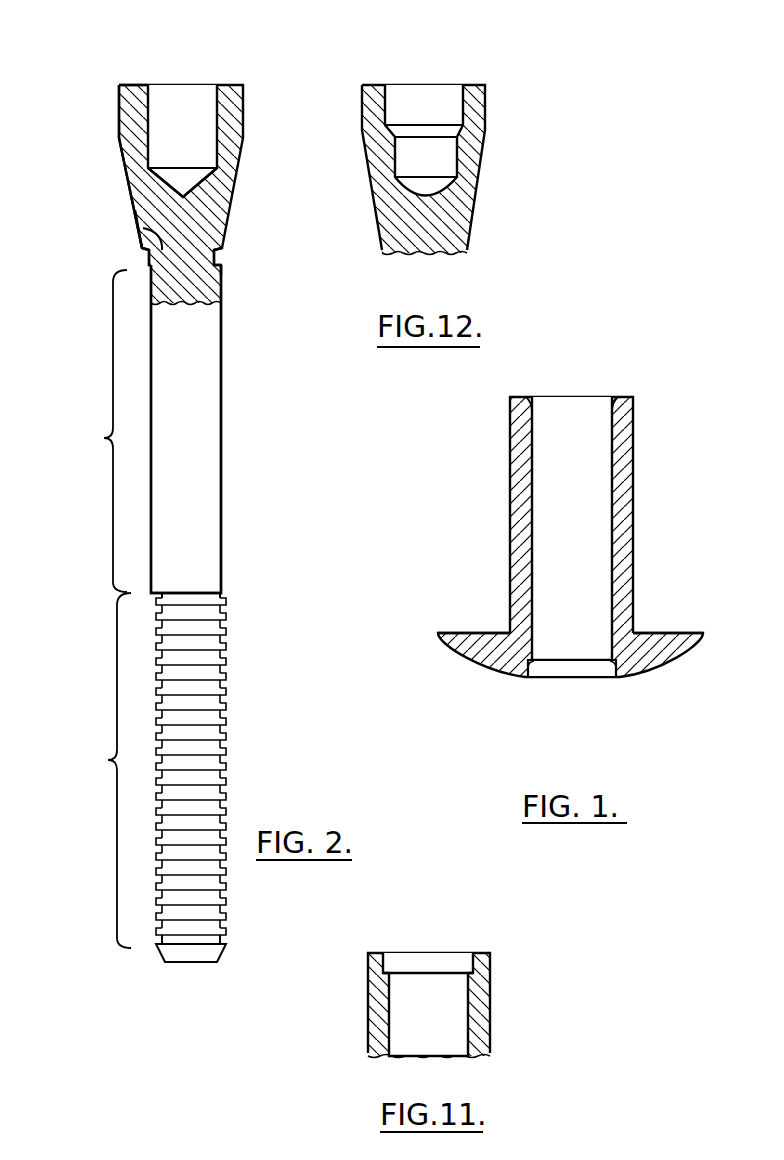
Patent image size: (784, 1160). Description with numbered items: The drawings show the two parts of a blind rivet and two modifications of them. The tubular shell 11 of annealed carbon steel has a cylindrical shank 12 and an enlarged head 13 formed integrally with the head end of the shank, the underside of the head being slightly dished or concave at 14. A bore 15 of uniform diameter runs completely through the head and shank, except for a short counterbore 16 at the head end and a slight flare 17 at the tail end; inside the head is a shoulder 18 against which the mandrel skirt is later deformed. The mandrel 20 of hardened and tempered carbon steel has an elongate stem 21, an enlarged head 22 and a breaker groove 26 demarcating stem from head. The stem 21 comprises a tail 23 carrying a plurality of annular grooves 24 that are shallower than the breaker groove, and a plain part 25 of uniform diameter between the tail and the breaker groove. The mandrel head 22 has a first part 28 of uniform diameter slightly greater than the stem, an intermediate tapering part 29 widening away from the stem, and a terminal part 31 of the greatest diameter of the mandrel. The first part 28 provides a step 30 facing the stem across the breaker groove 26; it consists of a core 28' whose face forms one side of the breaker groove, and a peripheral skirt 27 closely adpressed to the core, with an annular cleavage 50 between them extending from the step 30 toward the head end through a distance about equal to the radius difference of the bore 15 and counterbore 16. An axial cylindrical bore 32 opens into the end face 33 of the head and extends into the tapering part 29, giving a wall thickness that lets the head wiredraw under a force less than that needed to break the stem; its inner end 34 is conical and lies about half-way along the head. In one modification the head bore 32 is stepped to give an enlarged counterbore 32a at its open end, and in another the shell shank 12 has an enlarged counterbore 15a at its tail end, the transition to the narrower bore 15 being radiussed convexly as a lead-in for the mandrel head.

In FIG. 1, the tubular shell 11 is at (498, 549).
In FIG. 1, the cylindrical shank 12 is at (625, 573).
In FIG. 11, the cylindrical shank 12 is at (490, 1030).
In FIG. 1, the enlarged head 13 is at (665, 655).
In FIG. 1, the dished underside of head 14 is at (648, 631).
In FIG. 1, the bore 15 is at (585, 545).
In FIG. 11, the bore 15 is at (392, 1015).
In FIG. 11, the counterbore 15a is at (470, 960).
In FIG. 1, the counterbore 16 is at (607, 677).
In FIG. 1, the flare 17 is at (615, 399).
In FIG. 1, the shoulder 18 is at (535, 680).
In FIG. 2, the mandrel 20 is at (284, 601).
In FIG. 2, the stem 21 is at (232, 507).
In FIG. 2, the mandrel head 22 is at (228, 199).
In FIG. 2, the tail 23 is at (104, 768).
In FIG. 2, the annular grooves 24 is at (217, 721).
In FIG. 2, the plain part 25 is at (106, 446).
In FIG. 2, the breaker groove 26 is at (145, 263).
In FIG. 2, the skirt 27 is at (222, 258).
In FIG. 2, the first part 28 is at (105, 245).
In FIG. 2, the core 28' is at (84, 227).
In FIG. 2, the intermediate tapering part 29 is at (122, 190).
In FIG. 2, the step 30 is at (223, 268).
In FIG. 2, the terminal part 31 is at (112, 124).
In FIG. 2, the axial cylindrical bore 32 is at (190, 107).
In FIG. 12, the axial cylindrical bore 32 is at (457, 160).
In FIG. 12, the counterbore 32a is at (462, 101).
In FIG. 2, the end face 33 is at (133, 85).
In FIG. 2, the inner end of head bore 34 is at (185, 197).
In FIG. 2, the annular cleavage 50 is at (226, 244).